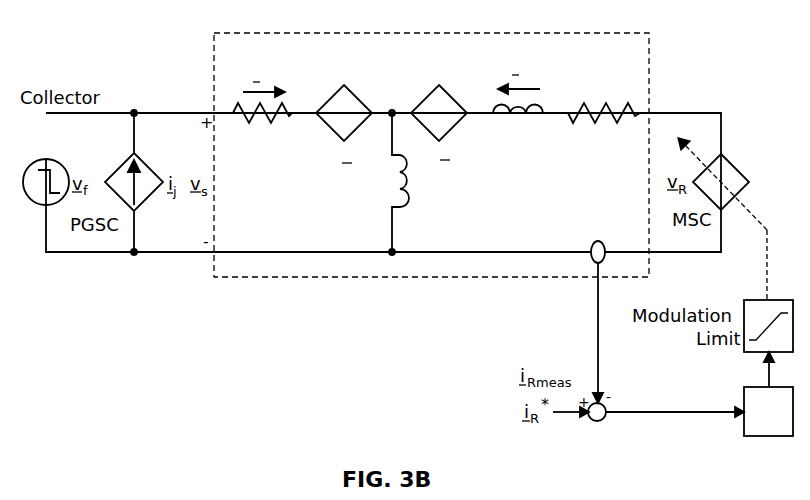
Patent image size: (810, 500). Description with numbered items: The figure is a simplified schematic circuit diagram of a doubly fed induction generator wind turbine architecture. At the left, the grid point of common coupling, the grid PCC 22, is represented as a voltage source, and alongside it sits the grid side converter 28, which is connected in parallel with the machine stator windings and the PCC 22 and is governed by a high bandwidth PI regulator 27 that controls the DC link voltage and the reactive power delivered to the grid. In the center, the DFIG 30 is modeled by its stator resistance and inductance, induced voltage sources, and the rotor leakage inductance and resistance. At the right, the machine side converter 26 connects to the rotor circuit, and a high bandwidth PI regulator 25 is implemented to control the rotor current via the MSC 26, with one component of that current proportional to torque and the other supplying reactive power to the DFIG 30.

The grid PCC 22 is at (50, 160).
The PI regulator 25 is at (768, 437).
The machine side converter 26 is at (737, 166).
The PI regulator 27 is at (156, 172).
The grid side converter 28 is at (172, 248).
The DFIG 30 is at (256, 33).